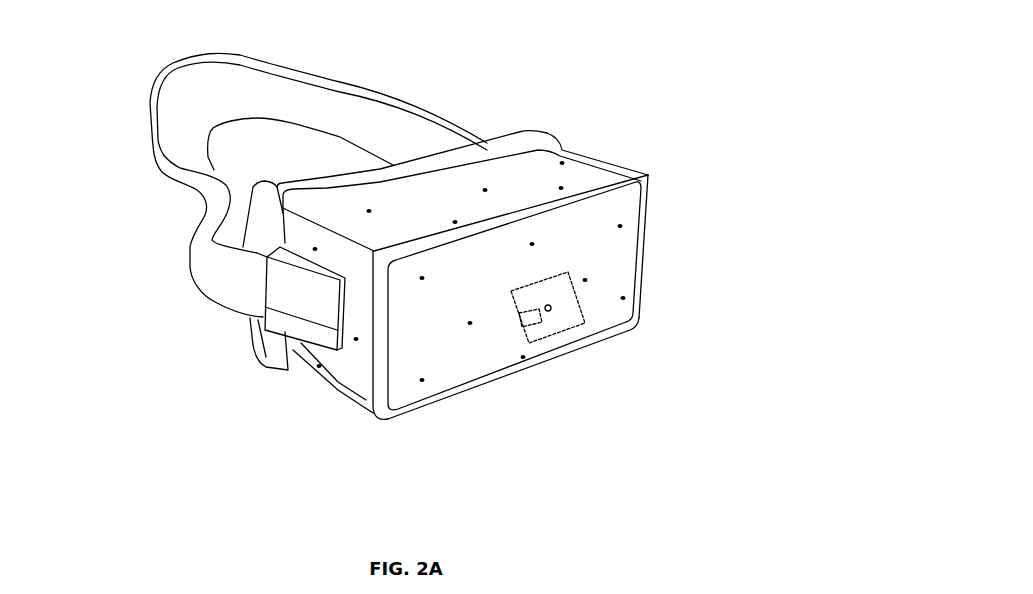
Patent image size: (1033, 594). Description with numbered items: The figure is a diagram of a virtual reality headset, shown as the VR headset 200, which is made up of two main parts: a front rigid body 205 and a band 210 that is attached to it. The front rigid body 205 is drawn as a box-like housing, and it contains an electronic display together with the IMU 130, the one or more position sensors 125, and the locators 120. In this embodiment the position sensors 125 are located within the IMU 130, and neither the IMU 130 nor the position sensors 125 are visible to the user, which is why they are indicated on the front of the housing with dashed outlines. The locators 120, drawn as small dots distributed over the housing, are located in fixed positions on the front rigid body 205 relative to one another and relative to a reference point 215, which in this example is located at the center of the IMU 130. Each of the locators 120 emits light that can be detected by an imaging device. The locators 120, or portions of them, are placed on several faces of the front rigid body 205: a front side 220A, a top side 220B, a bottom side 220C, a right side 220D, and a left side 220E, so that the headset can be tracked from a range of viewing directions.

The VR headset 200 is at (48, 51).
The front rigid body 205 is at (647, 173).
The band 210 is at (403, 102).
The front side 220A is at (411, 408).
The top side 220B is at (336, 211).
The bottom side 220C is at (309, 405).
The right side 220D is at (348, 375).
The left side 220E is at (625, 156).
The locators 120 is at (638, 293).
The position sensors 125 is at (519, 339).
The IMU 130 is at (597, 324).
The reference point 215 is at (553, 321).